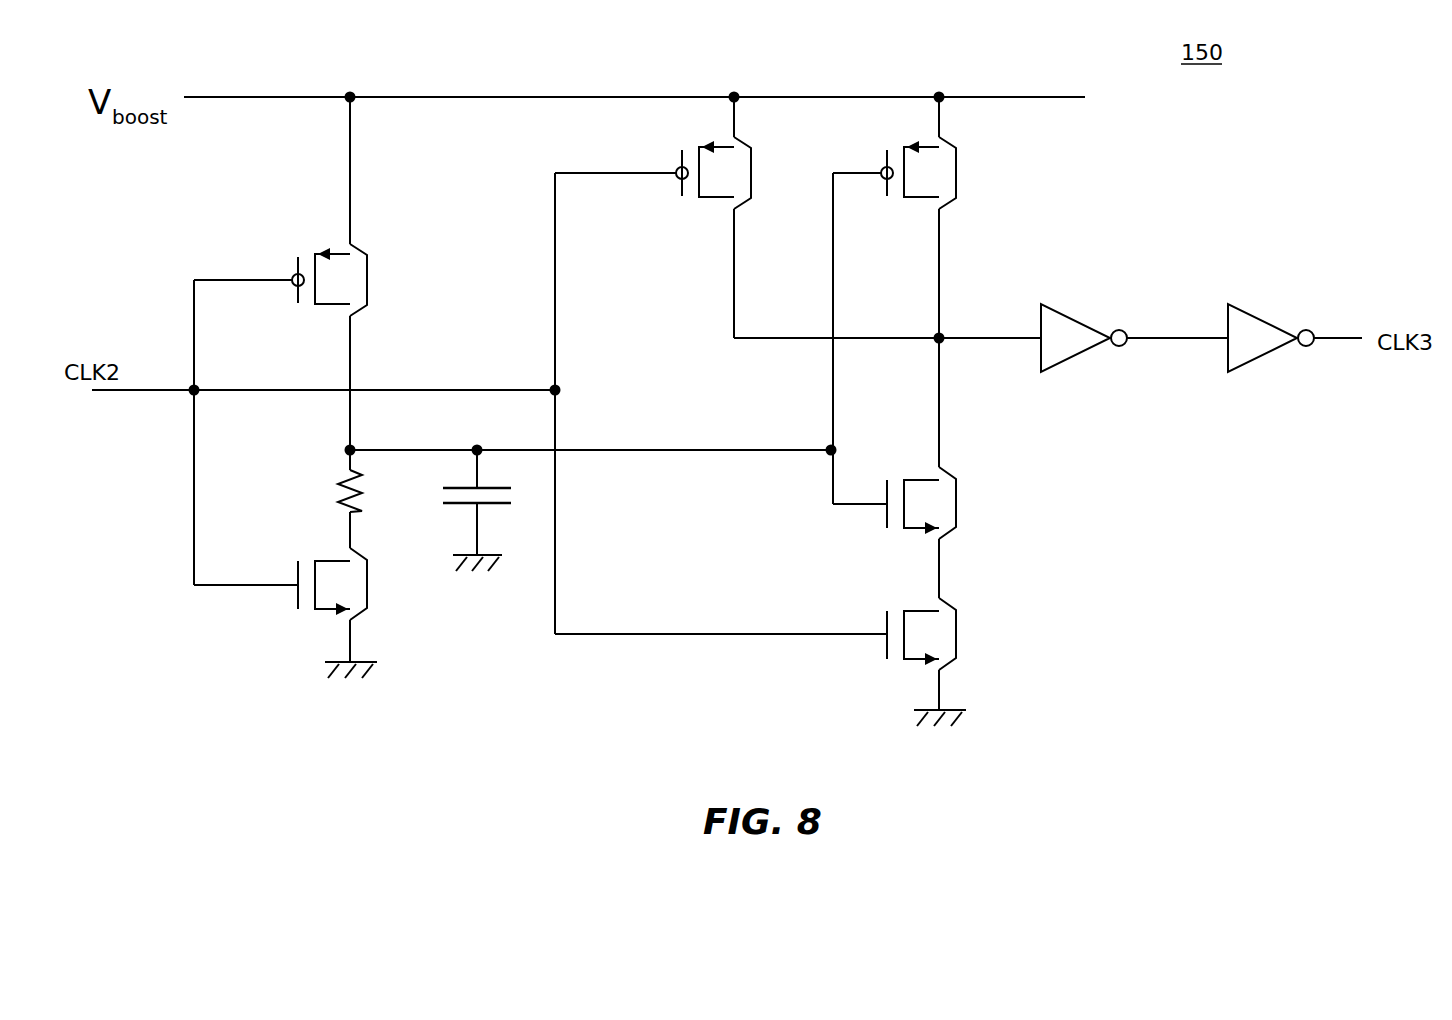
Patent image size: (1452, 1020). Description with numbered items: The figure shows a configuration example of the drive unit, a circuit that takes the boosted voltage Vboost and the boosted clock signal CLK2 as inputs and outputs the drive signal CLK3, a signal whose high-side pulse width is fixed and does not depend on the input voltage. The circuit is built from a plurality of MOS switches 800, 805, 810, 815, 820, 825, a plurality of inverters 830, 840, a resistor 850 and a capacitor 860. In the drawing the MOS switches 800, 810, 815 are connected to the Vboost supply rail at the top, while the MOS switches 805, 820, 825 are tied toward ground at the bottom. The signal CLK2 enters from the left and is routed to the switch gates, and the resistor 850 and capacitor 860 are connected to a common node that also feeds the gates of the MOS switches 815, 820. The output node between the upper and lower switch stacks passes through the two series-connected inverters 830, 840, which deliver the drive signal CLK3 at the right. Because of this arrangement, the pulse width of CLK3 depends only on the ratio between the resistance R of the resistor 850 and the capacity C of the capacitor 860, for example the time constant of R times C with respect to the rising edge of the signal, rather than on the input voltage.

The MOS switch 800 is at (368, 265).
The MOS switch 805 is at (316, 612).
The MOS switch 810 is at (752, 172).
The MOS switch 815 is at (957, 170).
The MOS switch 820 is at (957, 498).
The MOS switch 825 is at (957, 630).
The inverter 830 is at (1065, 304).
The inverter 840 is at (1261, 304).
The resistor 850 is at (341, 472).
The capacitor 860 is at (463, 504).